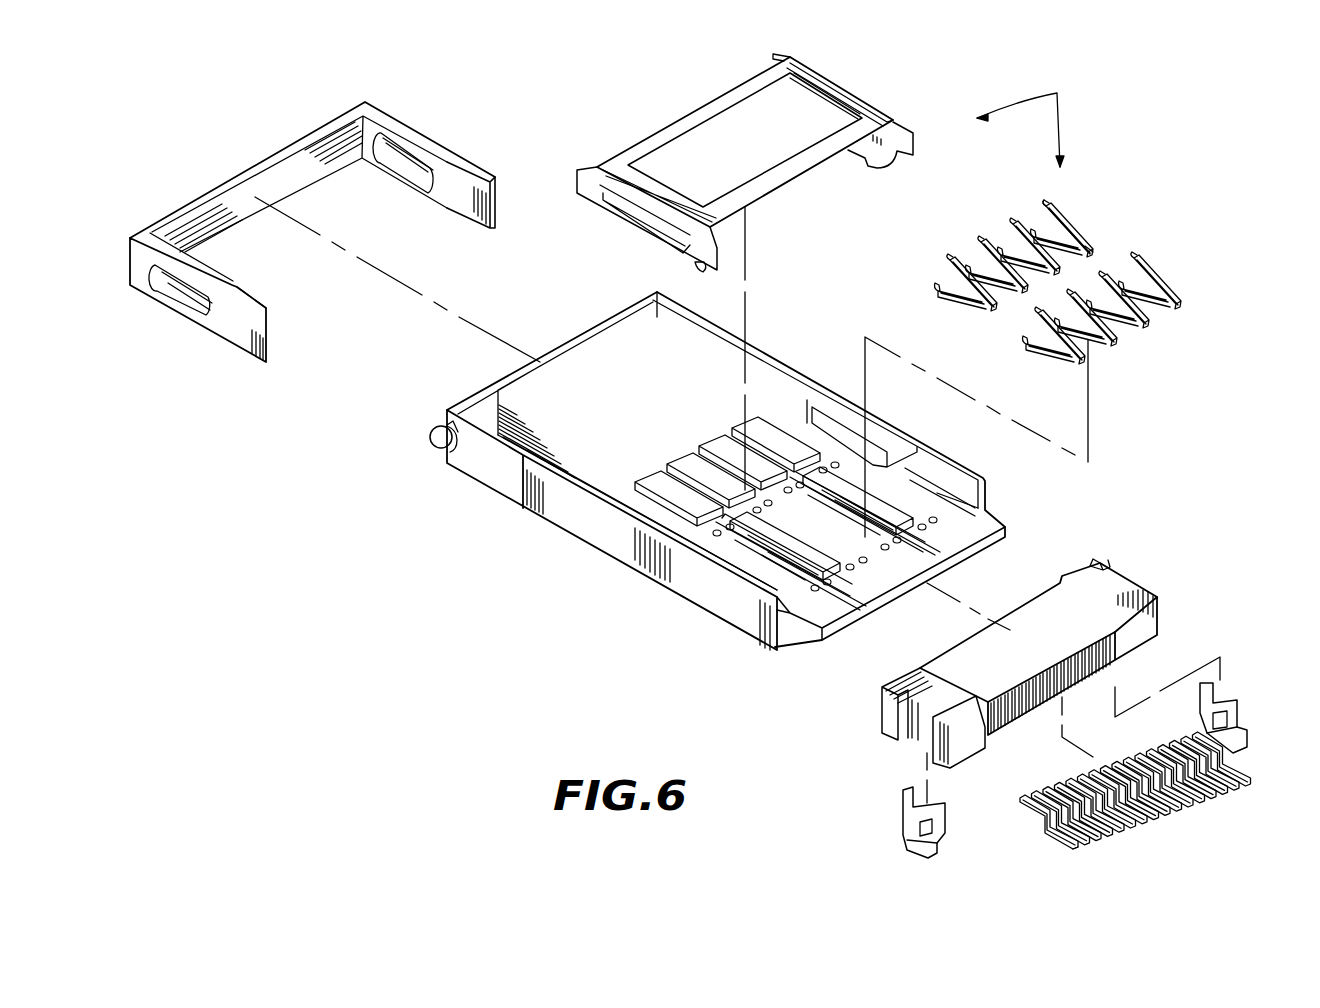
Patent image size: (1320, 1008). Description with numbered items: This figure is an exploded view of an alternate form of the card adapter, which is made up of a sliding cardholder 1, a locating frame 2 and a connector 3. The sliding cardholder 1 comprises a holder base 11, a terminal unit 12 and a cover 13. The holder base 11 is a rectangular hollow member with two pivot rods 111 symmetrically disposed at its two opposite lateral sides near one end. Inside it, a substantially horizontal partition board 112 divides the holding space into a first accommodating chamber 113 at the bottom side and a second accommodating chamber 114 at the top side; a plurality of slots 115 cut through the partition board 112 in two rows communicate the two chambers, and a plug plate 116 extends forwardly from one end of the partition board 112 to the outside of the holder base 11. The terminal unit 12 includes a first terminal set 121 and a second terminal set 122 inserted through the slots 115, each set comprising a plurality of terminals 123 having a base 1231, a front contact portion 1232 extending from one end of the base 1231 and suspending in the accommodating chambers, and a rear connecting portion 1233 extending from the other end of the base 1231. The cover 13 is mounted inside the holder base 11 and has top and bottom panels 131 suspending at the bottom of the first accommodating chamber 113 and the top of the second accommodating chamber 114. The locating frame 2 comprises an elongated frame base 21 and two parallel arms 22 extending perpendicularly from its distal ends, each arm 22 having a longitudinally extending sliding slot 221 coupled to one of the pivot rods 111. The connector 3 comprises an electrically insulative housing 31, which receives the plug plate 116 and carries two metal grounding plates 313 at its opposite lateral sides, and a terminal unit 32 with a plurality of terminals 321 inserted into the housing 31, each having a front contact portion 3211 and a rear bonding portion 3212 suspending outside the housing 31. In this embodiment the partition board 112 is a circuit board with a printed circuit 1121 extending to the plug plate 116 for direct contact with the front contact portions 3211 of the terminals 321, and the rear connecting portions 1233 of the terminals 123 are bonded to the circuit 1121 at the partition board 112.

The sliding cardholder 1 is at (1020, 113).
The holder base 11 is at (744, 512).
The pivot rods 111 is at (438, 443).
The partition board 112 is at (588, 530).
The circuit 1121 is at (727, 560).
The first accommodating chamber 113 is at (793, 660).
The second accommodating chamber 114 is at (602, 368).
The slots 115 is at (772, 443).
The plug plate 116 is at (970, 568).
The terminal unit 12 is at (1087, 264).
The first terminal set 121 is at (957, 312).
The second terminal set 122 is at (1049, 285).
The terminals 123 is at (1049, 264).
The base 1231 is at (1070, 227).
The front contact portion 1232 is at (1048, 207).
The rear connecting portion 1233 is at (1092, 247).
The cover 13 is at (751, 272).
The top and bottom panels 131 is at (700, 118).
The locating frame 2 is at (335, 221).
The elongated frame base 21 is at (278, 175).
The arms 22 is at (198, 313).
The sliding slot 221 is at (180, 297).
The connector 3 is at (1077, 681).
The housing 31 is at (1147, 632).
The metal grounding plates 313 is at (927, 857).
The terminal unit 32 is at (1128, 814).
The terminals 321 is at (1118, 814).
The front contact portion 3211 is at (1027, 798).
The rear bonding portion 3212 is at (1070, 848).